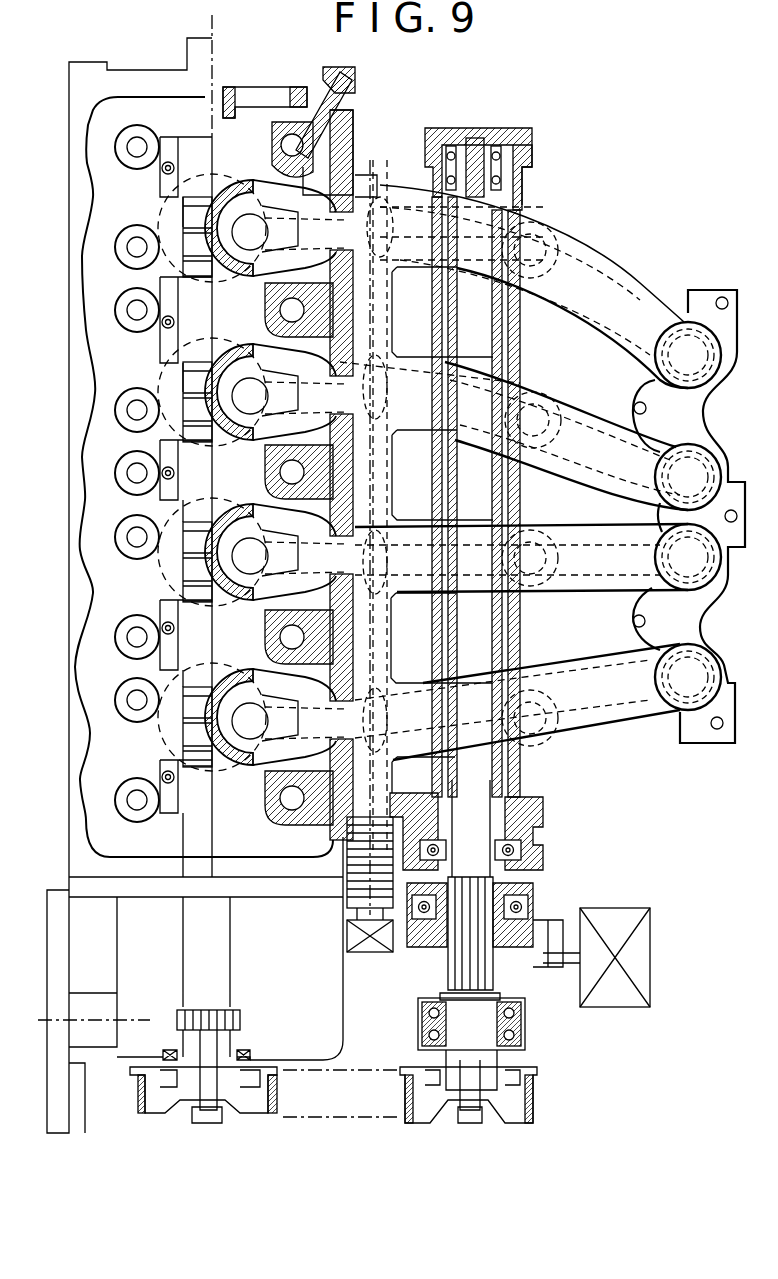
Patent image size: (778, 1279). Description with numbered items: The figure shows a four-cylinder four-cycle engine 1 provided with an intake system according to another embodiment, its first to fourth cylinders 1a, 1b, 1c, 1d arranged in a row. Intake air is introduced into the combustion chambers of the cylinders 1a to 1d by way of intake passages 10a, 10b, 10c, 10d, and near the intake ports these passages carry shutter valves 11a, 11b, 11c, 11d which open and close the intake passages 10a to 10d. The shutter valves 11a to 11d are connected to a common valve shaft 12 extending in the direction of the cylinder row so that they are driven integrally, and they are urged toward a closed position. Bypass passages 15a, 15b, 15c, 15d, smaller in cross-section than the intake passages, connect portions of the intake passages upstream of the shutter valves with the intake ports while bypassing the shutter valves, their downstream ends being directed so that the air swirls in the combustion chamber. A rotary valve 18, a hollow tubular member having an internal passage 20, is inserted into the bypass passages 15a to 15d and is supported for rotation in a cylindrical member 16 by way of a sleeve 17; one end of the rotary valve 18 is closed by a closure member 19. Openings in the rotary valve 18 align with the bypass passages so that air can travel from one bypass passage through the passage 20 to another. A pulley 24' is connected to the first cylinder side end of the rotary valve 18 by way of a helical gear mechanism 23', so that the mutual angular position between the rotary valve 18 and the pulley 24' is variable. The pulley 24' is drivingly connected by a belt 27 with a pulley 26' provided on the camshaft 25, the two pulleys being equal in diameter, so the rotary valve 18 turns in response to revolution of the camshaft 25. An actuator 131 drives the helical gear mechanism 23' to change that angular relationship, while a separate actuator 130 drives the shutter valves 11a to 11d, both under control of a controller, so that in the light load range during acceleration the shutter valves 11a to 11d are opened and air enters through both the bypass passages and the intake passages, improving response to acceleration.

The engine 1 is at (138, 53).
The first cylinder 1a is at (165, 740).
The second cylinder 1b is at (165, 578).
The third cylinder 1c is at (165, 368).
The fourth cylinder 1d is at (165, 208).
The intake passage 10a is at (620, 705).
The intake passage 10b is at (590, 570).
The intake passage 10c is at (596, 430).
The intake passage 10d is at (612, 270).
The shutter valve 11a is at (409, 741).
The shutter valve 11b is at (427, 606).
The shutter valve 11c is at (428, 437).
The shutter valve 11d is at (394, 196).
The valve shaft 12 is at (400, 300).
The bypass passage 15a is at (524, 754).
The bypass passage 15b is at (523, 588).
The bypass passage 15c is at (522, 482).
The bypass passage 15d is at (525, 300).
The cylindrical member 16 is at (531, 150).
The sleeve 17 is at (500, 782).
The rotary valve 18 is at (505, 822).
The closure member 19 is at (508, 128).
The passage 20 is at (482, 792).
The helical gear mechanism 23' is at (513, 933).
The pulley 24' is at (505, 1060).
The camshaft 25 is at (185, 1082).
The pulley 26' is at (183, 1097).
The belt 27 is at (310, 1117).
The actuator 130 is at (362, 955).
The actuator 131 is at (652, 965).